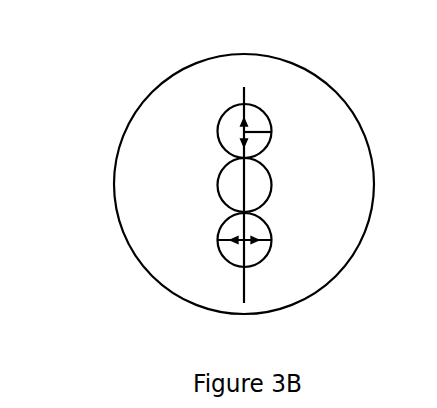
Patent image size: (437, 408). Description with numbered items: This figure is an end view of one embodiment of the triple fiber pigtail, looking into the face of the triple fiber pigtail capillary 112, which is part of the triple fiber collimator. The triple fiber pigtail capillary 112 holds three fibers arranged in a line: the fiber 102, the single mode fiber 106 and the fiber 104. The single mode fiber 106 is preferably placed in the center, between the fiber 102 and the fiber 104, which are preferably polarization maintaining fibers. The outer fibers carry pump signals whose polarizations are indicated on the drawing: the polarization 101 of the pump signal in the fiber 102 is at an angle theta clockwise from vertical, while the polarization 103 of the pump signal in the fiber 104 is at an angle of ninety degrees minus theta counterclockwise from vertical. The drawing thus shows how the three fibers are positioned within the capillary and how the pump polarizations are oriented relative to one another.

The triple fiber pigtail capillary 112 is at (229, 37).
The fiber 102 is at (218, 128).
The single mode fiber 106 is at (218, 181).
The fiber 104 is at (217, 240).
The polarization 101 is at (272, 132).
The polarization 103 is at (266, 248).